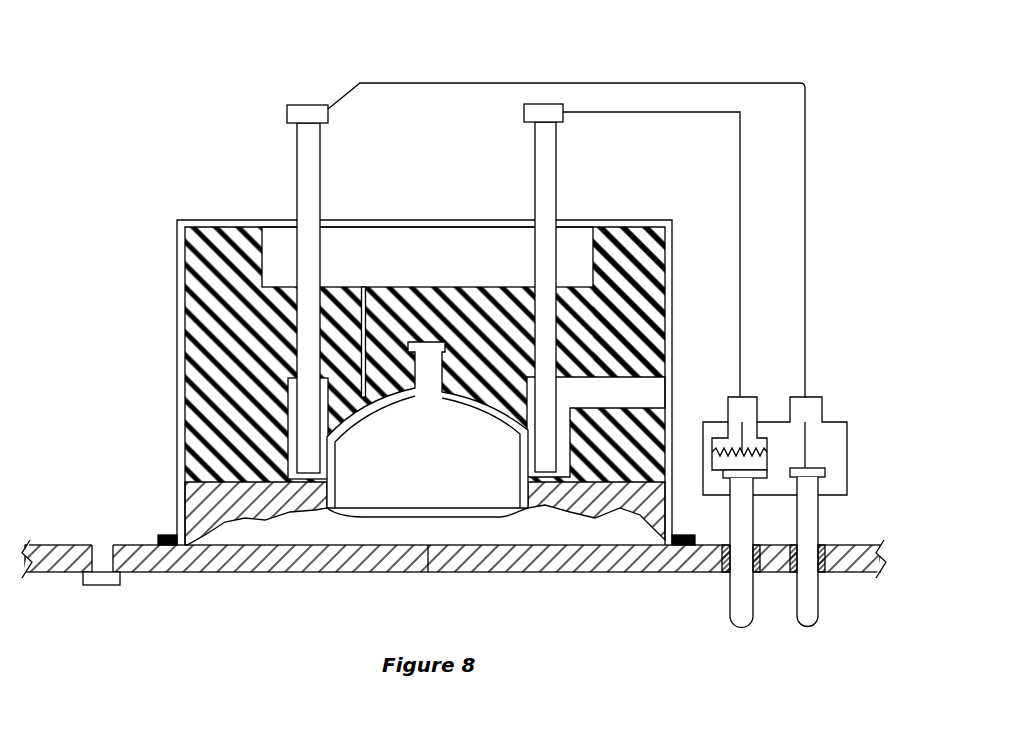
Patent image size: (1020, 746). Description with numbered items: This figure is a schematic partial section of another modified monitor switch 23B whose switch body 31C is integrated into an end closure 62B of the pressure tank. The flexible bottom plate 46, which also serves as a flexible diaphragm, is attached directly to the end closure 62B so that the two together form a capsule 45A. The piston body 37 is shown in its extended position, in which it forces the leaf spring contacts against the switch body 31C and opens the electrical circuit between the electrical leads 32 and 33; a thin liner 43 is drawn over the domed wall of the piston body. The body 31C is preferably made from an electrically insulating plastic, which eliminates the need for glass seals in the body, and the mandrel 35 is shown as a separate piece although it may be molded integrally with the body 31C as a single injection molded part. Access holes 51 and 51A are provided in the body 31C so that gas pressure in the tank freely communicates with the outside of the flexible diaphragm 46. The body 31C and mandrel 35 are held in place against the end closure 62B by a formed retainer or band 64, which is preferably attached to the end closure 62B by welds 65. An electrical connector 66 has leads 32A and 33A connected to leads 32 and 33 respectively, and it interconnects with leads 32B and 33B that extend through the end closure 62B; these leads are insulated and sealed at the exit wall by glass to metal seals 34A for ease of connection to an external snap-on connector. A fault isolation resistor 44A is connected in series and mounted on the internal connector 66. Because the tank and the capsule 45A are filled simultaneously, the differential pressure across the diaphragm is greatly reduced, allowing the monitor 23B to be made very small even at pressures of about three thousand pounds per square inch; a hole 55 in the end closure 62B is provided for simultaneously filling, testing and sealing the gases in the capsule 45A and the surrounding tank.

The monitor switch 23B is at (226, 210).
The switch body 31C is at (648, 248).
The electrical lead 32 is at (553, 160).
The electrical lead 33 is at (318, 162).
The lead 32A is at (740, 130).
The lead 33A is at (688, 80).
The lead 32B is at (735, 603).
The lead 33B is at (808, 613).
The glass to metal seal 34A is at (723, 568).
The mandrel 35 is at (527, 495).
The piston body 37 is at (460, 450).
The liner 43 is at (357, 415).
The fault isolation resistor 44A is at (755, 448).
The capsule 45A is at (308, 541).
The flexible bottom plate 46 is at (362, 512).
The access hole 51 is at (620, 388).
The access hole 51A is at (364, 287).
The hole 55 is at (430, 572).
The end closure 62B is at (60, 545).
The retainer band 64 is at (176, 392).
The weld 65 is at (168, 535).
The electrical connector 66 is at (828, 422).